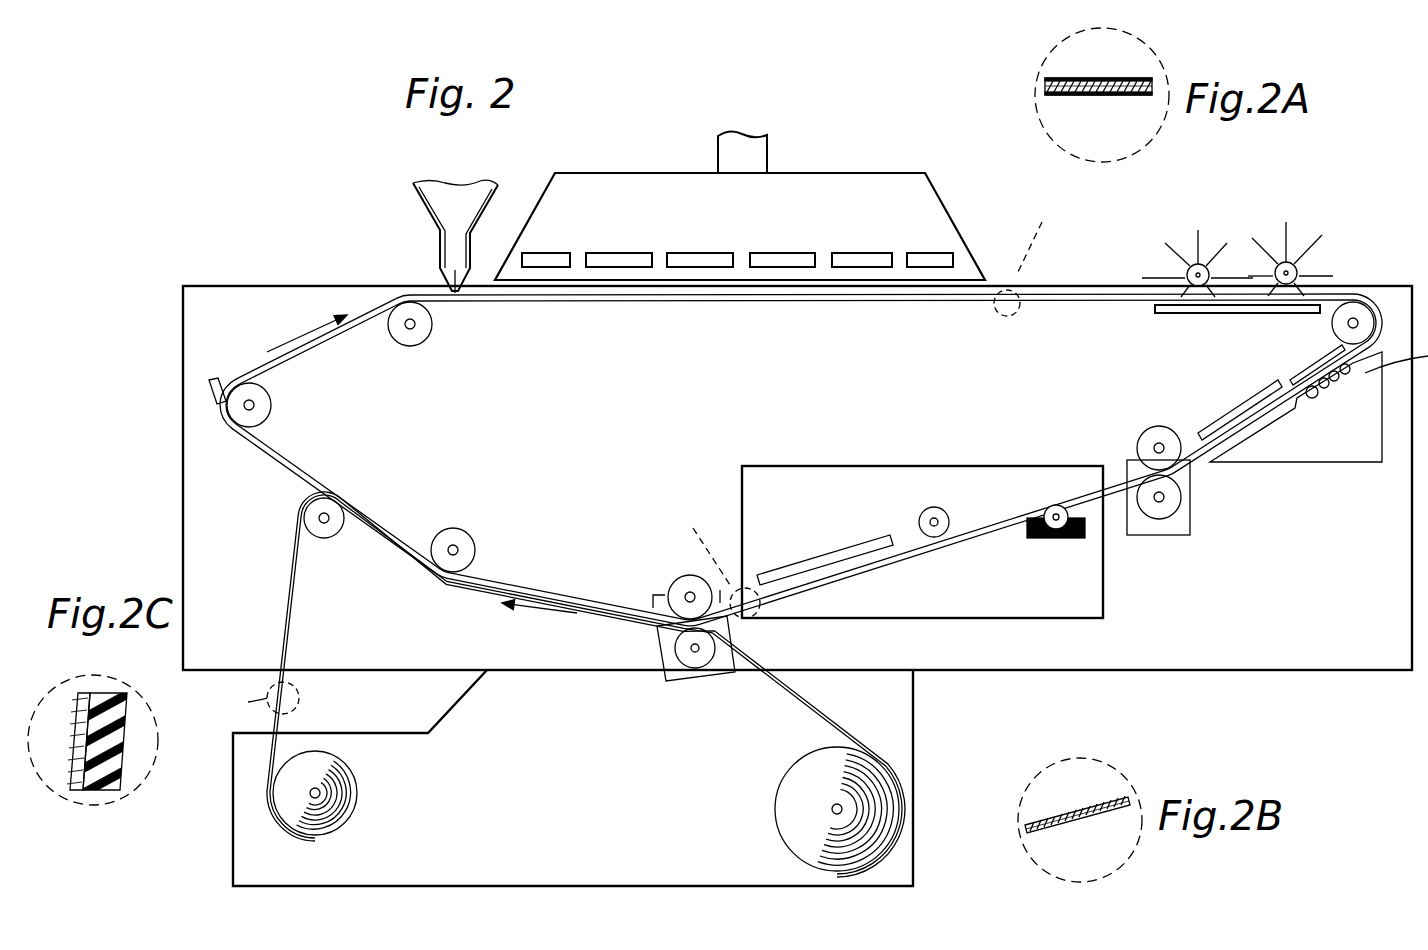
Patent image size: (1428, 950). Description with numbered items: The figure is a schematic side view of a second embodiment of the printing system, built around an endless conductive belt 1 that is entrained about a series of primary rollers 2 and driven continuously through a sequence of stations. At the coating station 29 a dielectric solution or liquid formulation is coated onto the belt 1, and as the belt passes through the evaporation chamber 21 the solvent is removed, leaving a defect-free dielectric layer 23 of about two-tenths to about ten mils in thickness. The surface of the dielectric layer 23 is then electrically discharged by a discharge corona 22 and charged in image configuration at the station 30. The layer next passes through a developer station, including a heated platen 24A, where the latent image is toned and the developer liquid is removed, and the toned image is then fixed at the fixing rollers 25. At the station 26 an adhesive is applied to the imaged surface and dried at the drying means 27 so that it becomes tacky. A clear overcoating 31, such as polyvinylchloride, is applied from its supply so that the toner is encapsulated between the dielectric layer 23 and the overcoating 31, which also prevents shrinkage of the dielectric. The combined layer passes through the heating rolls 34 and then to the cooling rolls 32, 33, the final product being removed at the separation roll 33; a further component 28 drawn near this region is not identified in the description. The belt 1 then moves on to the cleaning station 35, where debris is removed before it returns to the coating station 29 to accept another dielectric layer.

In FIG. 2, the endless conductive belt 1 is at (367, 317).
In FIG. 2A, the endless conductive belt 1 is at (1102, 95).
In FIG. 2B, the endless conductive belt 1 is at (1083, 800).
In FIG. 2, the primary rollers 2 is at (425, 340).
In FIG. 2, the evaporation chamber 21 is at (807, 197).
In FIG. 2, the discharge corona 22 is at (1195, 263).
In FIG. 2, the dielectric layer 23 is at (1018, 292).
In FIG. 2A, the dielectric layer 23 is at (1083, 78).
In FIG. 2B, the dielectric layer 23 is at (1062, 828).
In FIG. 2C, the dielectric layer 23 is at (78, 693).
In FIG. 2, the heated platen 24A is at (1233, 410).
In FIG. 2, the fixing rollers 25 is at (1154, 427).
In FIG. 2, the adhesive application station 26 is at (1072, 542).
In FIG. 2, the drying means 27 is at (827, 557).
In FIG. 2, the supply reel web 28 is at (290, 650).
In FIG. 2, the coating station 29 is at (438, 252).
In FIG. 2, the image charging station 30 is at (1290, 262).
In FIG. 2, the clear overcoating 31 is at (818, 712).
In FIG. 2C, the clear overcoating 31 is at (107, 687).
In FIG. 2, the cooling roll 32 is at (468, 562).
In FIG. 2, the separation roll 33 is at (336, 535).
In FIG. 2, the heating rolls 34 is at (680, 578).
In FIG. 2, the cleaning station 35 is at (271, 405).